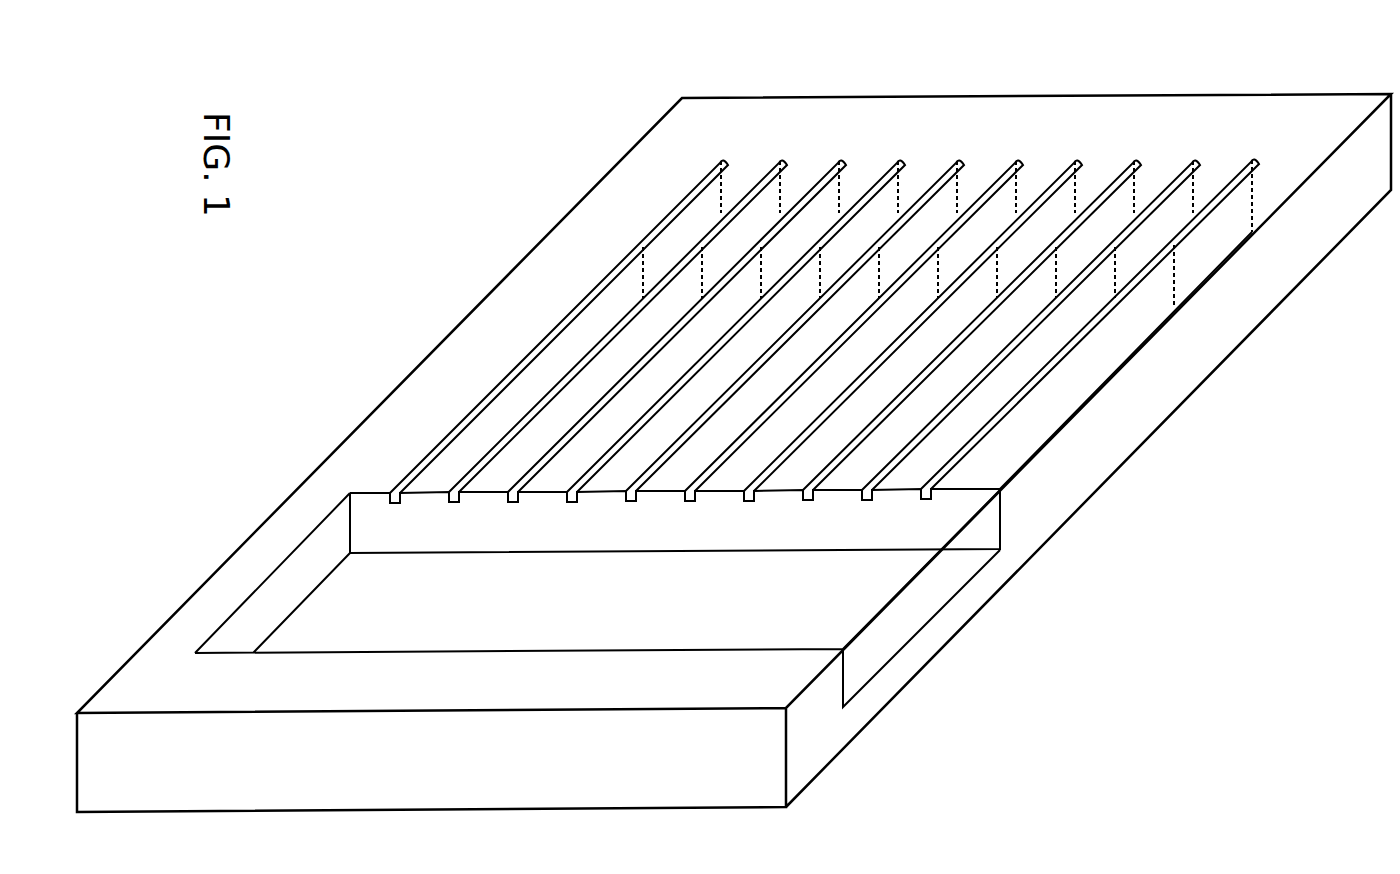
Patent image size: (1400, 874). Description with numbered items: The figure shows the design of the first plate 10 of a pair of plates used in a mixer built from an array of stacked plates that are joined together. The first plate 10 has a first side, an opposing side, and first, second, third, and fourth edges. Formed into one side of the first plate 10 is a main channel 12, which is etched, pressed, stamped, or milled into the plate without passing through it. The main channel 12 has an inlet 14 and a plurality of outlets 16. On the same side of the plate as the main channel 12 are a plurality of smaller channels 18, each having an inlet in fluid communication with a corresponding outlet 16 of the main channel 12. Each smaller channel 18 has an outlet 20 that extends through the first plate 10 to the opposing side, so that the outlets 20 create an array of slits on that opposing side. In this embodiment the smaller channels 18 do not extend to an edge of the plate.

The first plate 10 is at (1173, 94).
The main channel 12 is at (940, 508).
The inlet 14 is at (923, 568).
The outlets 16 is at (510, 492).
The smaller channels 18 is at (692, 303).
The outlet 20 is at (890, 203).